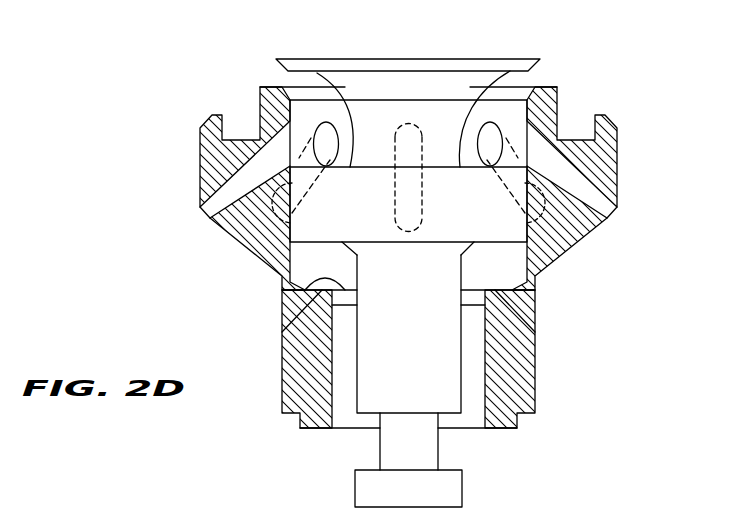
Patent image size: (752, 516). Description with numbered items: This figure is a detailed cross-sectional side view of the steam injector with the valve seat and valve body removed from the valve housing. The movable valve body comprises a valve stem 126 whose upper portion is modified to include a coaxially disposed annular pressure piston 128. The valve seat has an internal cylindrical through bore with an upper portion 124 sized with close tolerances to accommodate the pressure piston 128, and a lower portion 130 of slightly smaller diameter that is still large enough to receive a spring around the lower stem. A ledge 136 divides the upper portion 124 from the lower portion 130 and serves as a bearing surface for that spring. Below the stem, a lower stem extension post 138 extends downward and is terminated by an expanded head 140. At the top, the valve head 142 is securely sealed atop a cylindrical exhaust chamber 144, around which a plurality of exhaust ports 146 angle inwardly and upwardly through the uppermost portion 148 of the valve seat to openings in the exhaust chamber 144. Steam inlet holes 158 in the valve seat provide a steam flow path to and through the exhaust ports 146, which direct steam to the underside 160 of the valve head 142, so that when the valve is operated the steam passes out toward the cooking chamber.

The upper portion of the through bore 124 is at (280, 280).
The valve stem 126 is at (433, 403).
The annular pressure piston 128 is at (273, 243).
The lower portion of the through bore 130 is at (340, 360).
The ledge 136 is at (283, 322).
The lower stem extension post 138 is at (379, 440).
The expanded head 140 is at (463, 492).
The valve head 142 is at (490, 58).
The cylindrical exhaust chamber 144 is at (503, 110).
The exhaust ports 146 is at (490, 135).
The uppermost portion of the valve seat 148 is at (270, 107).
The steam inlet holes 158 is at (200, 214).
The underside of the valve head 160 is at (271, 68).